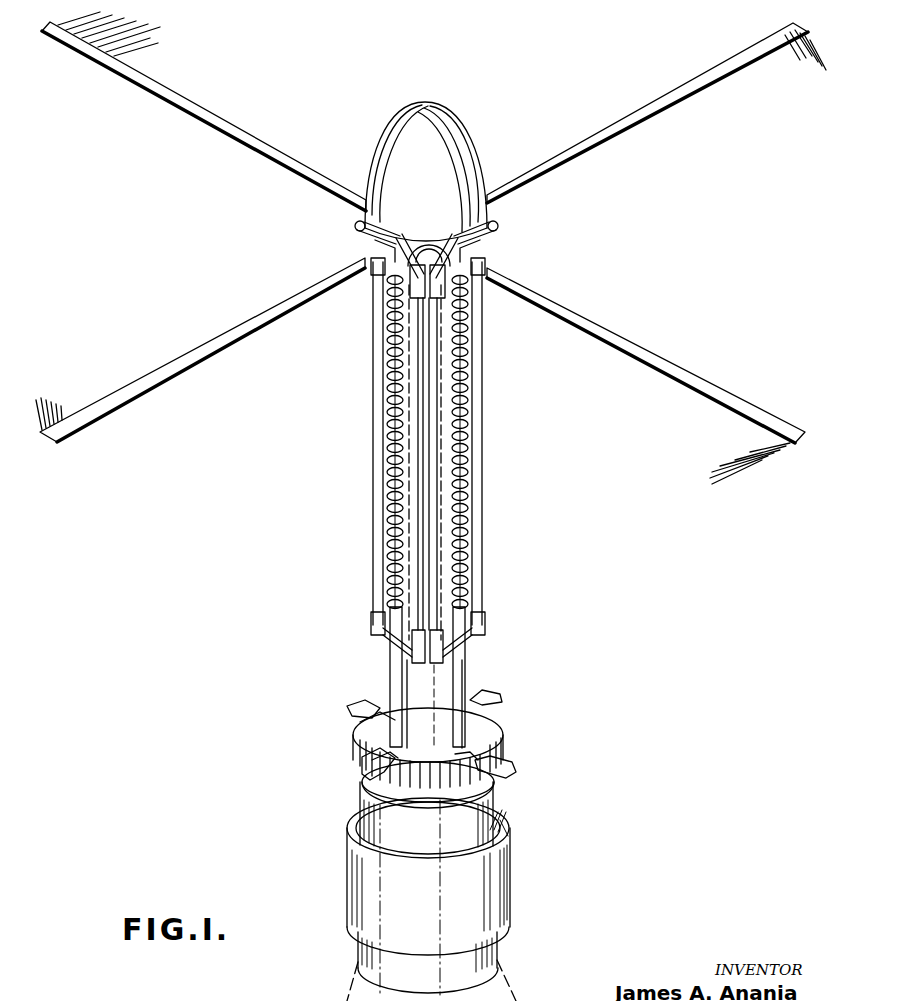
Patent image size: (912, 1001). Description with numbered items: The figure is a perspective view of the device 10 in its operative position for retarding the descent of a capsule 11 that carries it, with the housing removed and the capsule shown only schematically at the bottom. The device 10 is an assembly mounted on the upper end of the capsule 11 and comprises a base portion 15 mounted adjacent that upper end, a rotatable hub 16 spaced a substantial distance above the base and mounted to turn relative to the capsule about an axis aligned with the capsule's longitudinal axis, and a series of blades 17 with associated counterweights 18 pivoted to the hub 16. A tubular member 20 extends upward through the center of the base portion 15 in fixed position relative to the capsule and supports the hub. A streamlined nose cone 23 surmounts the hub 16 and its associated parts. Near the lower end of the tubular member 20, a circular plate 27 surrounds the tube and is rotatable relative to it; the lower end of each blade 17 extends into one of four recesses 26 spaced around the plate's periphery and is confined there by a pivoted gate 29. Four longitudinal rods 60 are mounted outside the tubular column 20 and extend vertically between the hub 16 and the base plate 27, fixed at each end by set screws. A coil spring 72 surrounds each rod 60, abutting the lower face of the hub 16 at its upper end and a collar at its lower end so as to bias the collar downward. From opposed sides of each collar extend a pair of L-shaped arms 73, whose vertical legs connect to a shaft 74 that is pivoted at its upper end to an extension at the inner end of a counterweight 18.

The device 10 is at (372, 428).
The capsule 11 is at (510, 850).
The base portion 15 is at (508, 722).
The rotatable hub 16 is at (362, 270).
The blades 17 is at (140, 80).
The counterweights 18 is at (498, 237).
The tubular member 20 is at (444, 707).
The nose cone 23 is at (437, 192).
The recesses 26 is at (372, 763).
The circular plate 27 is at (367, 733).
The gate 29 is at (375, 708).
The longitudinal rods 60 is at (470, 428).
The coil spring 72 is at (385, 320).
The L-shaped arms 73 is at (375, 645).
The shaft 74 is at (383, 552).